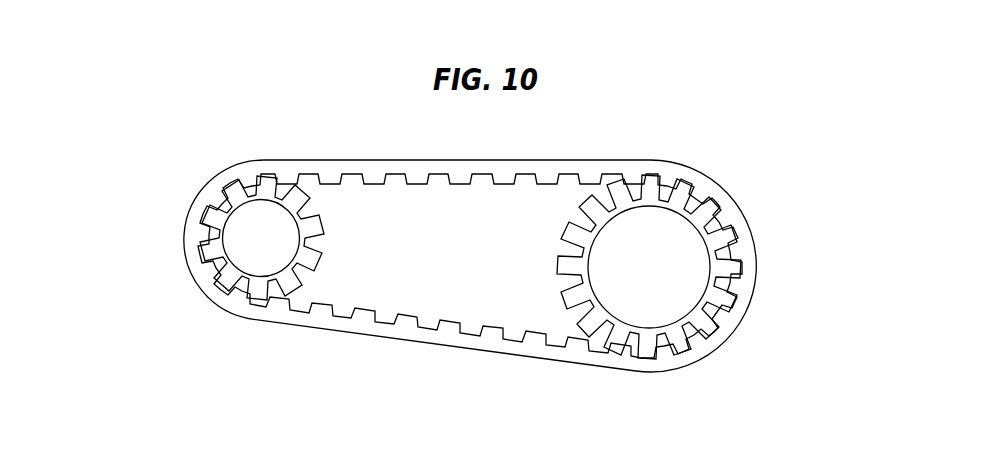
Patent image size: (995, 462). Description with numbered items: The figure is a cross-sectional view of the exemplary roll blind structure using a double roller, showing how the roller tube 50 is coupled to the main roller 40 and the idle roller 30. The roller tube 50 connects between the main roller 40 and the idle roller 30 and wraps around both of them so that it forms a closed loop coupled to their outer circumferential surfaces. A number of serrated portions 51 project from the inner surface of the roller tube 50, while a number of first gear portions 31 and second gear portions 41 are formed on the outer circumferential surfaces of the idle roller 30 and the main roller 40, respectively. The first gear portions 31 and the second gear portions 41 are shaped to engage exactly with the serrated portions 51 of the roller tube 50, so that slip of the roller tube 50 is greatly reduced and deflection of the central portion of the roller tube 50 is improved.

The idle roller 30 is at (208, 271).
The first gear portions 31 is at (208, 208).
The main roller 40 is at (680, 305).
The second gear portions 41 is at (713, 320).
The roller tube 50 is at (470, 306).
The serrated portions 51 is at (448, 325).